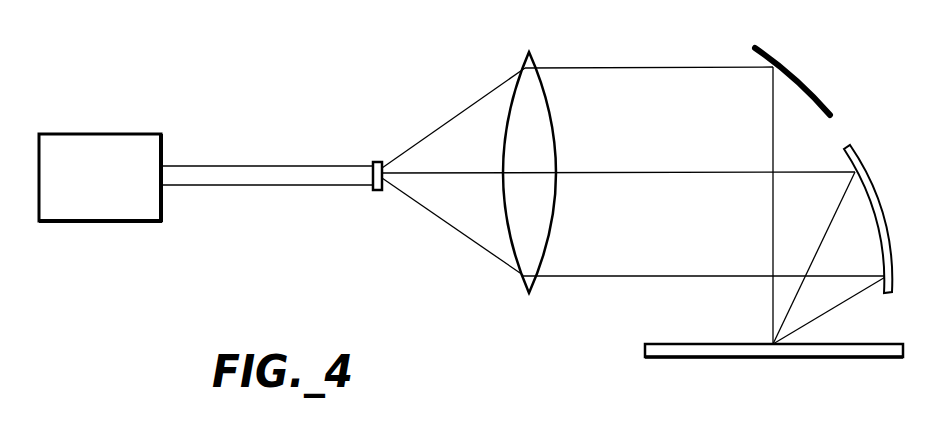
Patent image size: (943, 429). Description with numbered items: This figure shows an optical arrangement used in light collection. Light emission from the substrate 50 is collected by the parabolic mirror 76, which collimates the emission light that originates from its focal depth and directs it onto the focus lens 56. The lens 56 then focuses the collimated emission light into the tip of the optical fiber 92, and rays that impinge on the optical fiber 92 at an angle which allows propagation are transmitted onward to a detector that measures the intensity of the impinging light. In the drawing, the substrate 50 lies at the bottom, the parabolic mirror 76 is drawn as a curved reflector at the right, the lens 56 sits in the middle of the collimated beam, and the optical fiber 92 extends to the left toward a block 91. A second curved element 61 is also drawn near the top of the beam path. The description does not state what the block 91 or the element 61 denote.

The laser source 91 is at (83, 133).
The optical fiber 92 is at (285, 187).
The focus lens 56 is at (523, 65).
The mirror 61 is at (621, 85).
The parabolic mirror 76 is at (880, 193).
The substrate 50 is at (825, 357).